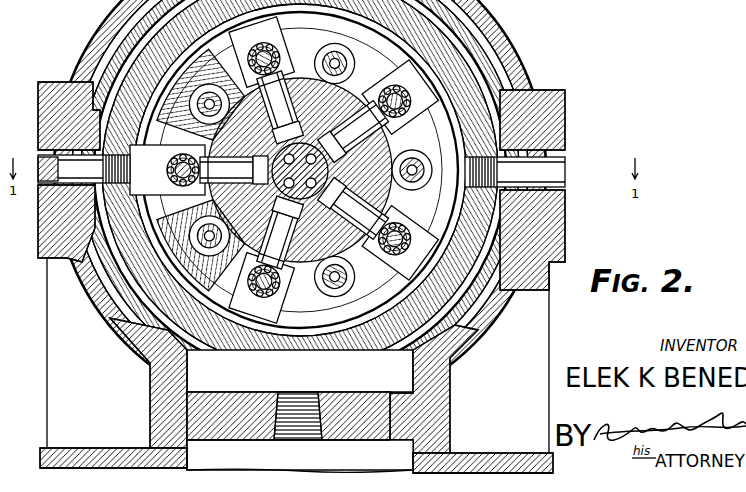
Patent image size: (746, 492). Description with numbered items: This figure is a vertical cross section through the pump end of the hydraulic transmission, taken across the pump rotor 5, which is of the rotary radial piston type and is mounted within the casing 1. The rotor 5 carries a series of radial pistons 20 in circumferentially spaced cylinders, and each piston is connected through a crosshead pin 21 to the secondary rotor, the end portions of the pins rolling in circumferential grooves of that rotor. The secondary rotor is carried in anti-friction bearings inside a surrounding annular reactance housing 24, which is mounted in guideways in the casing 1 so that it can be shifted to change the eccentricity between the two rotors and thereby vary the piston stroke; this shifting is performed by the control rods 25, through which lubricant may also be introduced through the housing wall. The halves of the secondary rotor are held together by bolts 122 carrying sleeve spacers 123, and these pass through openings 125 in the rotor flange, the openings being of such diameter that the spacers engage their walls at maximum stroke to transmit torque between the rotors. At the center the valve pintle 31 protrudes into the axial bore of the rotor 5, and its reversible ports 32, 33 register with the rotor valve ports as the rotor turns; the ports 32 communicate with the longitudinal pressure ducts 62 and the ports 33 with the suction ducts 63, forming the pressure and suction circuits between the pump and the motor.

The casing 1 is at (497, 50).
The pump rotor 5 is at (167, 110).
The radial pistons 20 is at (220, 202).
The crosshead pin 21 is at (250, 182).
The reactance housing 24 is at (476, 98).
The control rods 25 is at (60, 170).
The valve pintle 31 is at (215, 233).
The reversible ports 32 is at (386, 143).
The reversible ports 33 is at (390, 203).
The pressure ducts 62 is at (163, 110).
The suction ducts 63 is at (352, 255).
The bolts 122 is at (98, 4).
The sleeve spacers 123 is at (113, 80).
The openings 125 is at (80, 73).